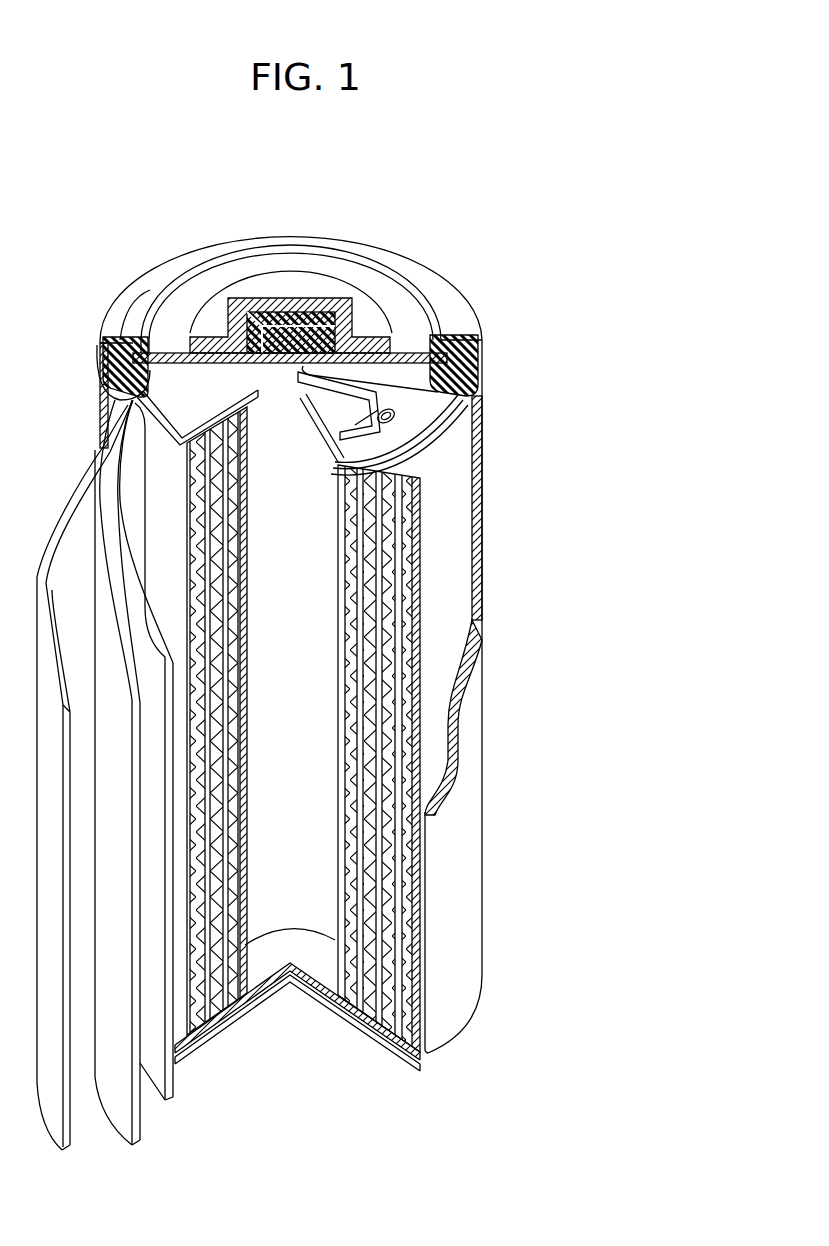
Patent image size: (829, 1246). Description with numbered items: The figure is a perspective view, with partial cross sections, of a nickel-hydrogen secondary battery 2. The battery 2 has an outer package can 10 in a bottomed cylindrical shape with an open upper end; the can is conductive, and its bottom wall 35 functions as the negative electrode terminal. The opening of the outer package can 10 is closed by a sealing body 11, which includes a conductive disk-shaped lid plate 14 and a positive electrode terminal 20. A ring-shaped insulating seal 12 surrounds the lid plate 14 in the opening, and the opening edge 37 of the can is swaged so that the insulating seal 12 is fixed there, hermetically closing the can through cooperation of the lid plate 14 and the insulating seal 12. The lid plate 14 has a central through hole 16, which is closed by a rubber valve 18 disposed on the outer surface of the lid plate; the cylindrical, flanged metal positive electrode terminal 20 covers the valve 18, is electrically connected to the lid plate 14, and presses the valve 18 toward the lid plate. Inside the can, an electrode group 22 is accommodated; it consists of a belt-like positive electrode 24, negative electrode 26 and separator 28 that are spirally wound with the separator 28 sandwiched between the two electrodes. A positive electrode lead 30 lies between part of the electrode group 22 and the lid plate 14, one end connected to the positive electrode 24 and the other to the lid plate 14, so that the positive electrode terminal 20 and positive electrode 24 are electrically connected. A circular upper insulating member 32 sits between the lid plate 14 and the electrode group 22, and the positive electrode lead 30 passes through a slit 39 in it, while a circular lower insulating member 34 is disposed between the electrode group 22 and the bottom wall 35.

The battery 2 is at (480, 233).
The outer package can 10 is at (472, 677).
The sealing body 11 is at (400, 322).
The insulating seal 12 is at (103, 366).
The lid plate 14 is at (175, 335).
The central through hole 16 is at (427, 370).
The valve 18 is at (267, 327).
The positive electrode terminal 20 is at (310, 272).
The electrode group 22 is at (457, 578).
The positive electrode 24 is at (177, 1093).
The negative electrode 26 is at (70, 1137).
The separator 28 is at (140, 1132).
The positive electrode lead 30 is at (458, 400).
The upper insulating member 32 is at (410, 427).
The lower insulating member 34 is at (310, 960).
The bottom wall 35 is at (228, 1010).
The opening edge 37 is at (453, 307).
The slit 39 is at (385, 428).